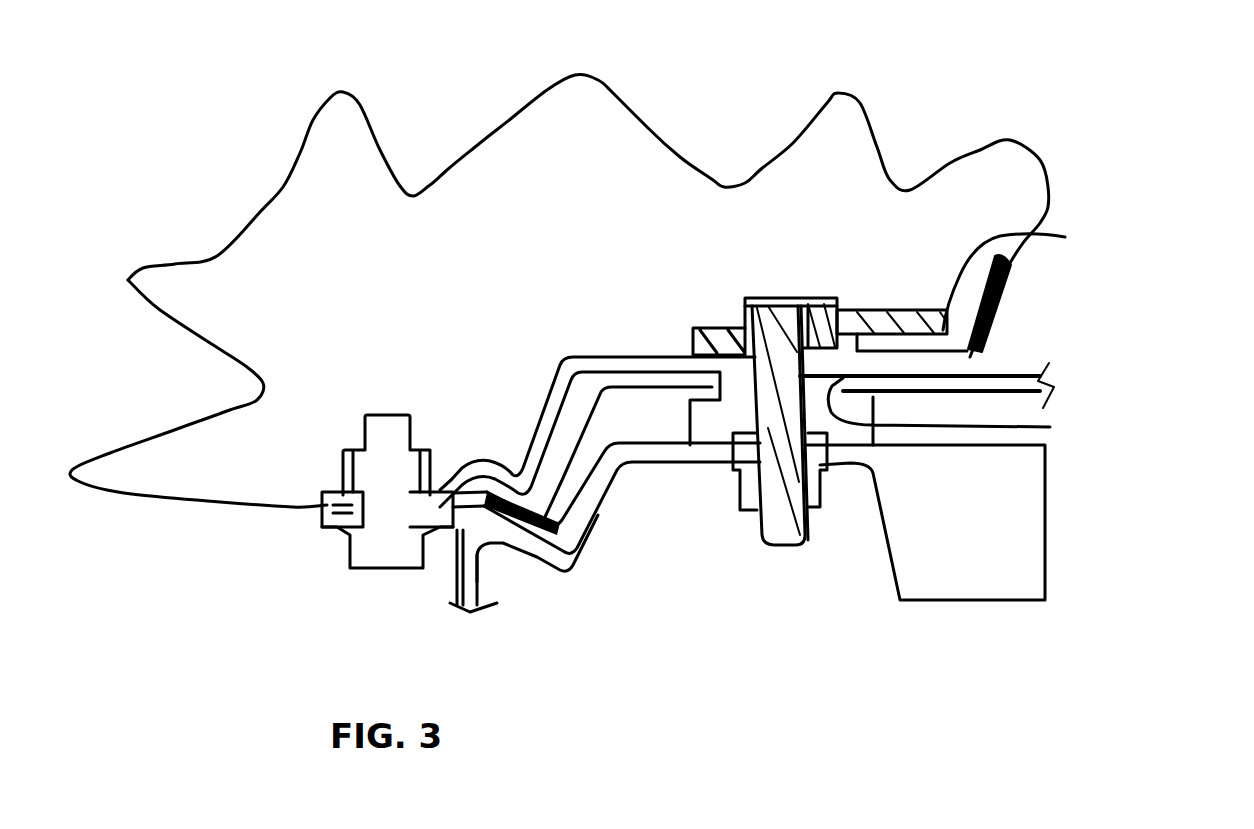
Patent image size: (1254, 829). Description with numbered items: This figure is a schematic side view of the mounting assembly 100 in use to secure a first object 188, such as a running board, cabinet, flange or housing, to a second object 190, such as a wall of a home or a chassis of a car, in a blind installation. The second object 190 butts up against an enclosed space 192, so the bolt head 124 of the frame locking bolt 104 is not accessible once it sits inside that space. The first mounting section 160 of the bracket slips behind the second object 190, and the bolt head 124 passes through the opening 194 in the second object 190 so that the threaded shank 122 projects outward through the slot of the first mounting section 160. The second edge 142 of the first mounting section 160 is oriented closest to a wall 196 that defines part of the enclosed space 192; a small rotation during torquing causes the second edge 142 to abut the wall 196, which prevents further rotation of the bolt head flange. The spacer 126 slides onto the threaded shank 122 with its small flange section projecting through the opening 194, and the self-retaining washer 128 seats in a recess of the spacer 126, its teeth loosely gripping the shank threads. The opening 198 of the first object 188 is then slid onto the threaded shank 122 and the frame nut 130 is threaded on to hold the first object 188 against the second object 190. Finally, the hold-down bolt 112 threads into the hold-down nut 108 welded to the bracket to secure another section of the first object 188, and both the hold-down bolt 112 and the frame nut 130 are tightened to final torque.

The mounting assembly 100 is at (703, 308).
The frame locking bolt 104 is at (820, 302).
The hold-down nut 108 is at (343, 468).
The hold-down bolt 112 is at (352, 566).
The threaded shank 122 is at (780, 540).
The bolt head 124 is at (767, 300).
The spacer 126 is at (697, 418).
The self-retaining washer 128 is at (740, 447).
The frame nut 130 is at (742, 478).
The second edge 142 is at (1035, 292).
The first mounting section 160 is at (883, 310).
The first object 188 is at (963, 560).
The second object 190 is at (1057, 383).
The enclosed space 192 is at (265, 192).
The opening 194 is at (1060, 430).
The wall 196 is at (975, 338).
The opening 198 is at (836, 467).